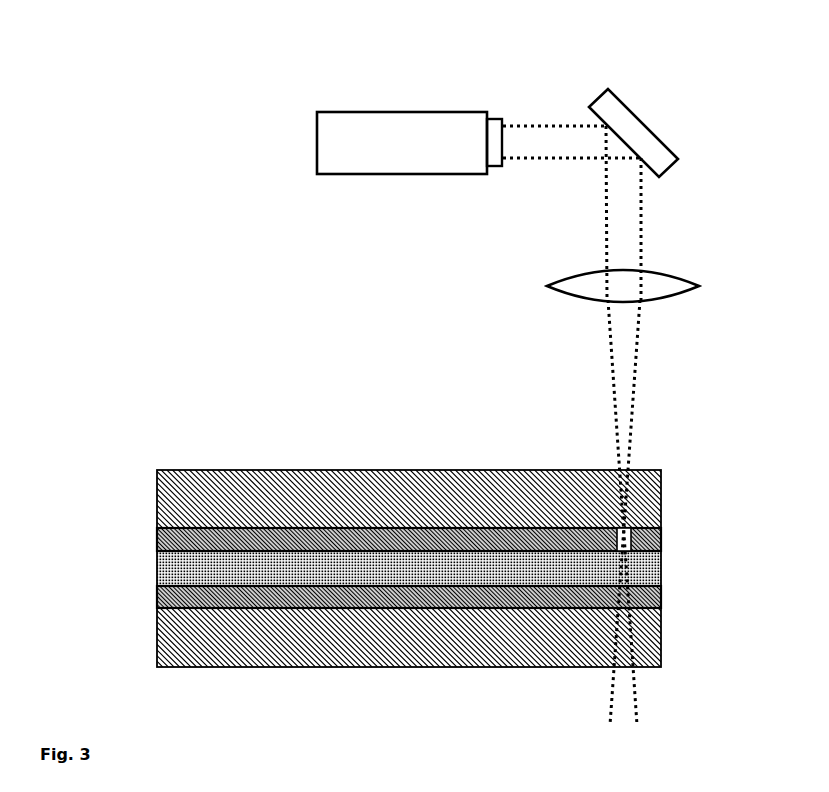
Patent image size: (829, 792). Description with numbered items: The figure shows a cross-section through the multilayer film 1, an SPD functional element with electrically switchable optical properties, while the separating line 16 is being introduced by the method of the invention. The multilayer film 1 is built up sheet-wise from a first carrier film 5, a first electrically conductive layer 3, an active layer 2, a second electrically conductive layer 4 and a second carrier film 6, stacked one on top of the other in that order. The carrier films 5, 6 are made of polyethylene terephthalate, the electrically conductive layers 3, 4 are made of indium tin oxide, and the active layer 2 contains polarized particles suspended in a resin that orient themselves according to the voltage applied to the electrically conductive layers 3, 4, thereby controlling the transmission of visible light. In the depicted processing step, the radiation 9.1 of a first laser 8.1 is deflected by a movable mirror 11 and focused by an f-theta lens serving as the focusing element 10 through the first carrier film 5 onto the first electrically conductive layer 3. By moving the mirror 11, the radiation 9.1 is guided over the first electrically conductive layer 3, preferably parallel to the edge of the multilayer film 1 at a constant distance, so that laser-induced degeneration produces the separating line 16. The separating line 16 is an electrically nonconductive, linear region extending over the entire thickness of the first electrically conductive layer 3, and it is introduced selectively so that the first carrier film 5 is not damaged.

The multilayer film 1 is at (417, 496).
The active layer 2 is at (175, 571).
The first electrically conductive layer 3 is at (183, 538).
The second electrically conductive layer 4 is at (173, 594).
The first carrier film 5 is at (185, 503).
The second carrier film 6 is at (183, 638).
The first laser 8.1 is at (350, 147).
The radiation 9.1 is at (541, 126).
The focusing element 10 is at (662, 286).
The movable mirror 11 is at (630, 131).
The separating line 16 is at (640, 538).